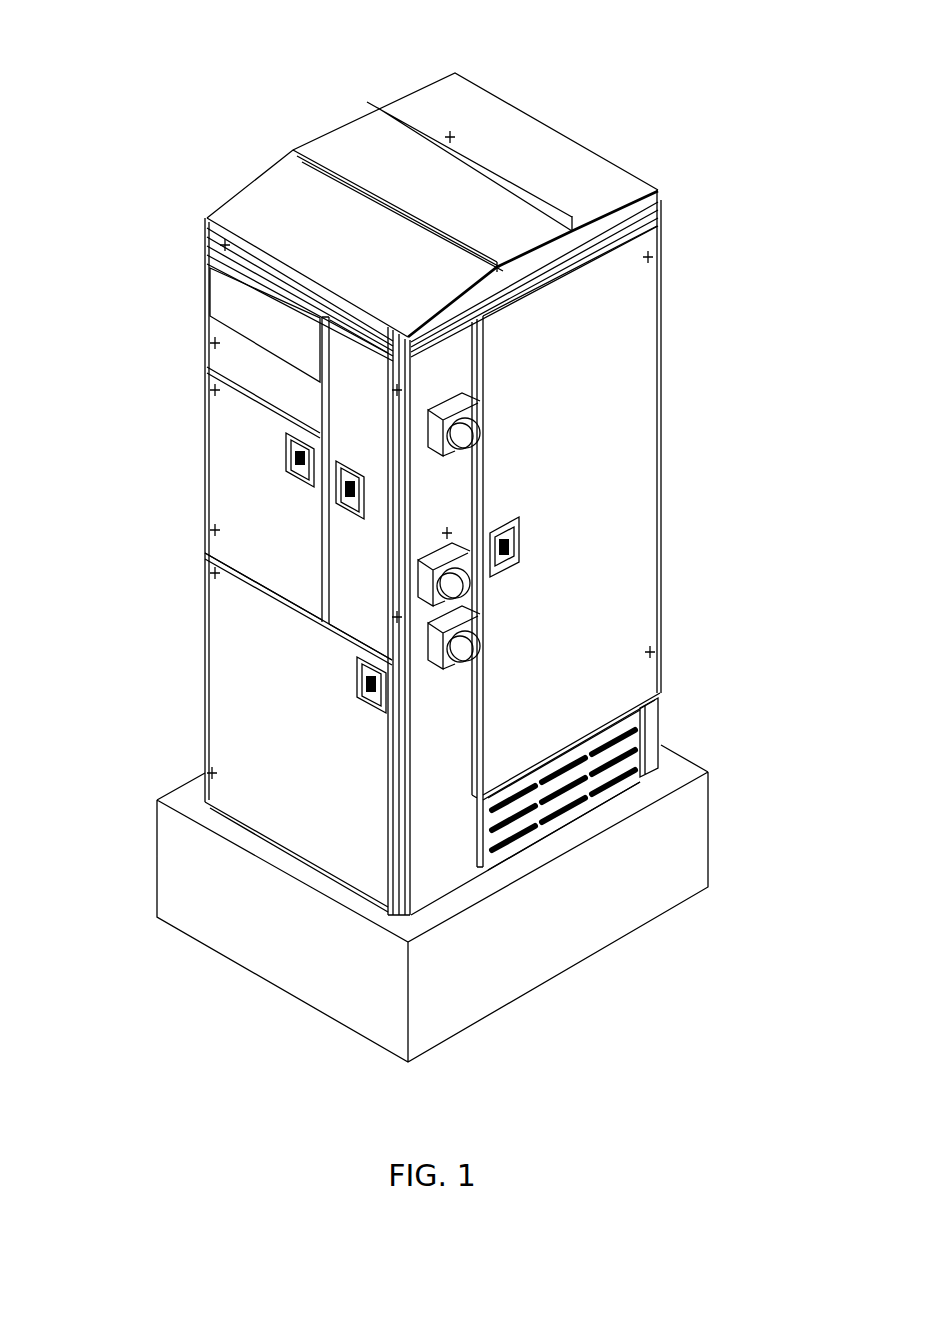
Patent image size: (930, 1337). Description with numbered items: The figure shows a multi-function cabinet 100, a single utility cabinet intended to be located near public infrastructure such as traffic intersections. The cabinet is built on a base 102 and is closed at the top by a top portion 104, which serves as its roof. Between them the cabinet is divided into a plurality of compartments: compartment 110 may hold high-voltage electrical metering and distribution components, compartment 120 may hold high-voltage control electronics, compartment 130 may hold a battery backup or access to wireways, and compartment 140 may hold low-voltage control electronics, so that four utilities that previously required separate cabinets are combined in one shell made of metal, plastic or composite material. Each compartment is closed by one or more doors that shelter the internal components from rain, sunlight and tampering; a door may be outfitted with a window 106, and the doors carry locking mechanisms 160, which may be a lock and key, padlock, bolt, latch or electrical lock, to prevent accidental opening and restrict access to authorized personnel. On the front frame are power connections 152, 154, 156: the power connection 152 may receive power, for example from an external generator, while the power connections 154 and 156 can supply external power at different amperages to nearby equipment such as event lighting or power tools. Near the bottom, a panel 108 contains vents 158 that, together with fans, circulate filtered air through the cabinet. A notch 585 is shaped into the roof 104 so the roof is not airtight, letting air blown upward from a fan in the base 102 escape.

The multi-function cabinet 100 is at (423, 553).
The base 102 is at (240, 942).
The top portion 104 is at (432, 195).
The window 106 is at (232, 306).
The panel 108 is at (636, 795).
The compartment 110 is at (221, 474).
The compartment 120 is at (360, 374).
The compartment 130 is at (231, 645).
The compartment 140 is at (623, 570).
The power connection 152 is at (494, 418).
The power connection 154 is at (466, 586).
The power connection 156 is at (494, 653).
The vent 158 is at (617, 732).
The locking mechanism 160 is at (284, 434).
The notch 585 is at (296, 150).